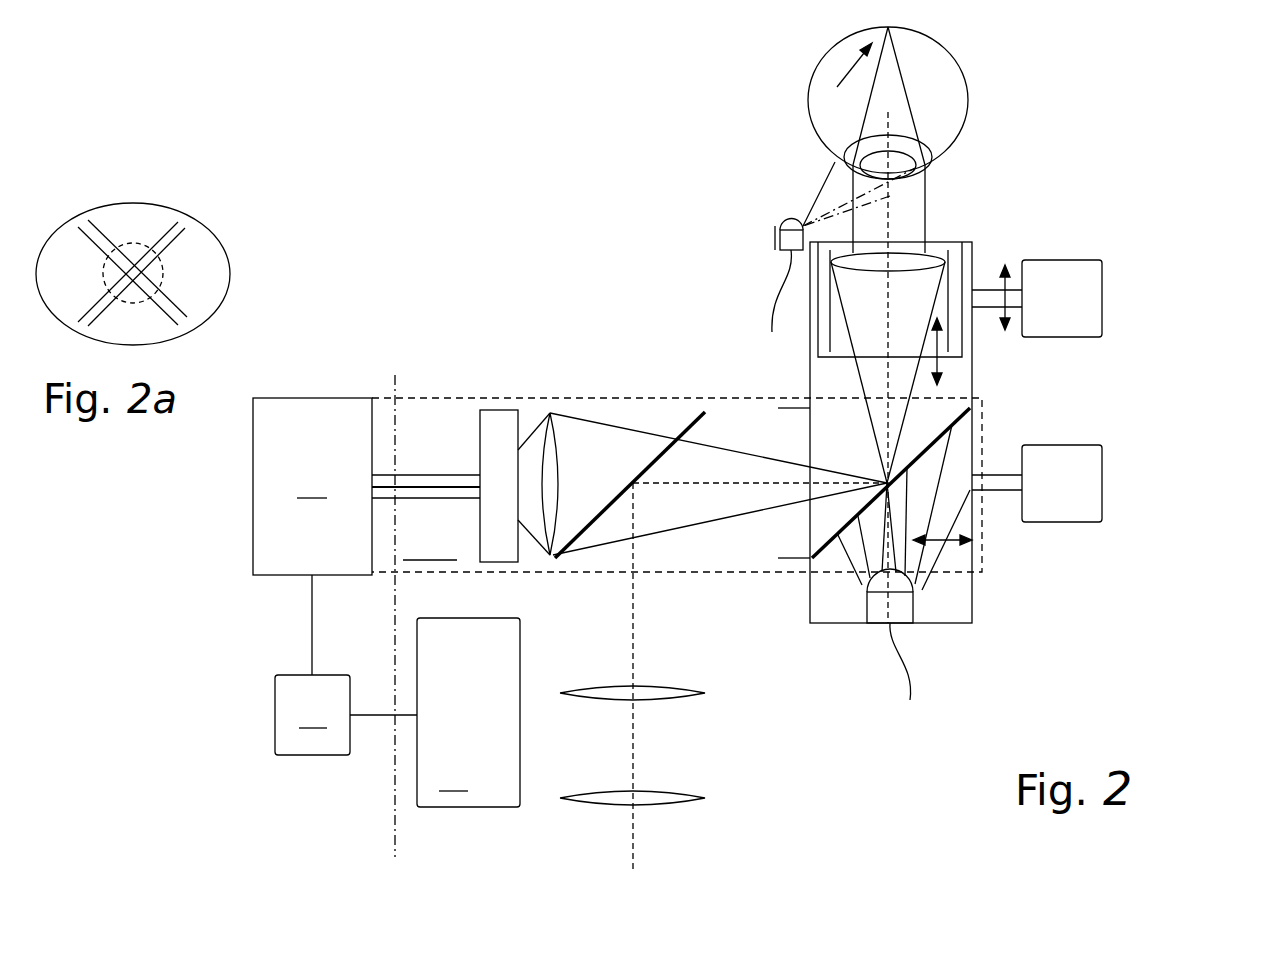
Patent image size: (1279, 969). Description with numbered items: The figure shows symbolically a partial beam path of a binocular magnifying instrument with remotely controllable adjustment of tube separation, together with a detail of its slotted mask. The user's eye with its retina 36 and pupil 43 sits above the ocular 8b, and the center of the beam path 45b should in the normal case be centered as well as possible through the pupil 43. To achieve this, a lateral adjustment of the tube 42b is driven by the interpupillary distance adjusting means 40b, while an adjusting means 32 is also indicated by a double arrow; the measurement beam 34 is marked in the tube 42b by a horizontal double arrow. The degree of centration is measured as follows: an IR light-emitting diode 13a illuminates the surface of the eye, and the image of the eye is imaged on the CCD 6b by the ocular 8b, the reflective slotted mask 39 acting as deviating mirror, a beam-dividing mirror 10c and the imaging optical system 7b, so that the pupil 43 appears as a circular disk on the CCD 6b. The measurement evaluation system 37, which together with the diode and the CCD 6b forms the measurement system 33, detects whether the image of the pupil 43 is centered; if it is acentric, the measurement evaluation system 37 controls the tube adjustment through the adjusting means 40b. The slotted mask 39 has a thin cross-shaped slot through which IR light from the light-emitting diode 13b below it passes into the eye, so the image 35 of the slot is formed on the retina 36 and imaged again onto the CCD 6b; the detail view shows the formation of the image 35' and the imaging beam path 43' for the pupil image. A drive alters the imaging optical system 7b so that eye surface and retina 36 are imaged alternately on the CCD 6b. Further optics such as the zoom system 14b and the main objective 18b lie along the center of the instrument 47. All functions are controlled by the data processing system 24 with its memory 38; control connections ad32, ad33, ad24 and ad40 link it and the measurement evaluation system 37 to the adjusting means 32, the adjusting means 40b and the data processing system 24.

In FIG. 2a, the formation of the image 35' is at (132, 208).
In FIG. 2a, the imaging beam path for the image of the pupil 43' is at (138, 196).
In FIG. 2a, the perforated or slotted mask 39 is at (160, 212).
In FIG. 2, the perforated or slotted mask 39 is at (975, 408).
In FIG. 2, the retina 36 is at (925, 62).
In FIG. 2, the image 35 is at (1018, 67).
In FIG. 2, the pupil 43 is at (1021, 141).
In FIG. 2, the center of the beam path 45b is at (890, 196).
In FIG. 2, the ocular lens 8b is at (972, 242).
In FIG. 2, the control line ad33 is at (1062, 270).
In FIG. 2, the adjusting means 32 is at (1037, 298).
In FIG. 2, the tube 42b is at (975, 368).
In FIG. 2, the means for adjusting for interpupillary distance 40b is at (1037, 483).
In FIG. 2, the control line ad24 is at (1103, 465).
In FIG. 2, the measurement beam 34 is at (982, 528).
In FIG. 2, the LED for IR light 13b is at (912, 608).
In FIG. 2, the LED for IR light 13a is at (776, 228).
In FIG. 2, the measurement evaluation system 37 is at (312, 536).
In FIG. 2, the control line ad32 is at (268, 488).
In FIG. 2, the measurement system 33 is at (426, 518).
In FIG. 2, the CCD 6b is at (498, 425).
In FIG. 2, the imaging optical system 7b is at (546, 425).
In FIG. 2, the beam-dividing mirror 10c is at (690, 428).
In FIG. 2, the data processing system 24 is at (346, 715).
In FIG. 2, the control line ad40 is at (285, 716).
In FIG. 2, the memory 38 is at (468, 712).
In FIG. 2, the center of the instrument 47 is at (395, 822).
In FIG. 2, the zoom system 14b is at (690, 700).
In FIG. 2, the main objective 18b is at (680, 793).